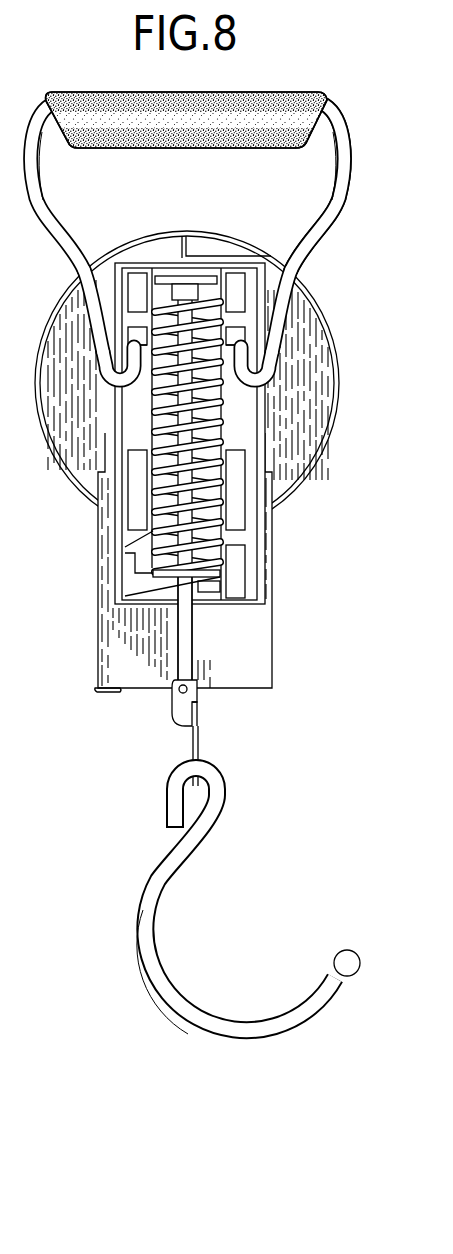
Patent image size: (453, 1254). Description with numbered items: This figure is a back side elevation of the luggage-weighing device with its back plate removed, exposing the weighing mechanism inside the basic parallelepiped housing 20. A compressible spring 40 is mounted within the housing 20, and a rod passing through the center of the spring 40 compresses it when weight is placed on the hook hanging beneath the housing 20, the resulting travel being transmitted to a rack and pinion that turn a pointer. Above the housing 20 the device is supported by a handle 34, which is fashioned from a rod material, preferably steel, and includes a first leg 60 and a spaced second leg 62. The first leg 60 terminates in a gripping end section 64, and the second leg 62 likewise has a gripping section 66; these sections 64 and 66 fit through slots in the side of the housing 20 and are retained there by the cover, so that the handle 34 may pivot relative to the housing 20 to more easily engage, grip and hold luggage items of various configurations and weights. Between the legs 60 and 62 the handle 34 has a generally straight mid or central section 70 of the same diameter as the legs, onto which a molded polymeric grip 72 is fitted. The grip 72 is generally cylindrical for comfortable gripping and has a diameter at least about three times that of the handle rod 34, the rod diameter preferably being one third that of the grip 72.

The housing 20 is at (253, 433).
The handle 34 is at (348, 162).
The compressible spring 40 is at (215, 512).
The first leg 60 is at (342, 208).
The second leg 62 is at (45, 193).
The gripping end section 64 is at (270, 377).
The gripping section 66 is at (105, 387).
The central section 70 is at (273, 110).
The polymeric grip 72 is at (325, 100).